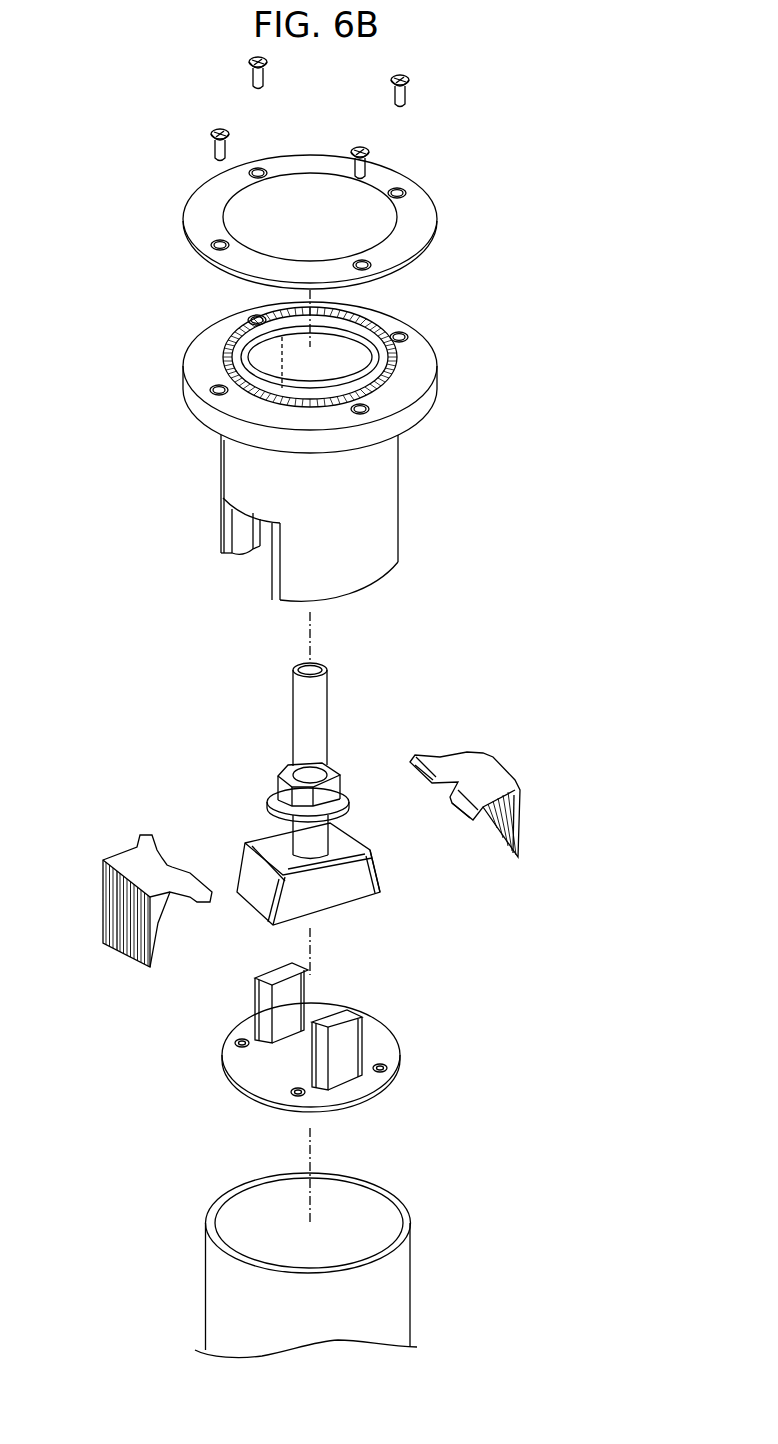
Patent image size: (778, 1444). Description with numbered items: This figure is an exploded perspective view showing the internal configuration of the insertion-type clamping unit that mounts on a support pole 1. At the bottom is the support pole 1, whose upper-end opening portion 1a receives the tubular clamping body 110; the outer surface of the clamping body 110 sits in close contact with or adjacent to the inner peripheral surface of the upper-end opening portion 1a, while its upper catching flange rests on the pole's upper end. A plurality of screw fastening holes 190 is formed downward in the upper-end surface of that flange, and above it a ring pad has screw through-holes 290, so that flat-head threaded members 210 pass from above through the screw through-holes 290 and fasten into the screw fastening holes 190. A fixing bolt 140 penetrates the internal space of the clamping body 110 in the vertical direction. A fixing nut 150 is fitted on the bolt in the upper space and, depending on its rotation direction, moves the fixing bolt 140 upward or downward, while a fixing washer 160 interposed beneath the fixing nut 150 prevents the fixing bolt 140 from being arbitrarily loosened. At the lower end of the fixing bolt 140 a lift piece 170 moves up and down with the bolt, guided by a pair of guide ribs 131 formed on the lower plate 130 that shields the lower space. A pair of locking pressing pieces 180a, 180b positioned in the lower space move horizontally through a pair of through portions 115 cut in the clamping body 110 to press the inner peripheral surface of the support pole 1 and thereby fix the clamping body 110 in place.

The support pole 1 is at (333, 1265).
The upper-end opening portion 1a is at (358, 1234).
The clamping body 110 is at (261, 448).
The through portions 115 is at (228, 525).
The lower plate 130 is at (364, 1059).
The guide ribs 131 is at (347, 1063).
The fixing bolt 140 is at (318, 700).
The fixing nut 150 is at (338, 764).
The fixing washer 160 is at (266, 794).
The lift piece 170 is at (363, 892).
The locking pressing piece 180a is at (116, 948).
The locking pressing piece 180b is at (499, 766).
The screw fastening holes 190 is at (218, 385).
The flat-head threaded members 210 is at (368, 163).
The screw through-holes 290 is at (412, 179).